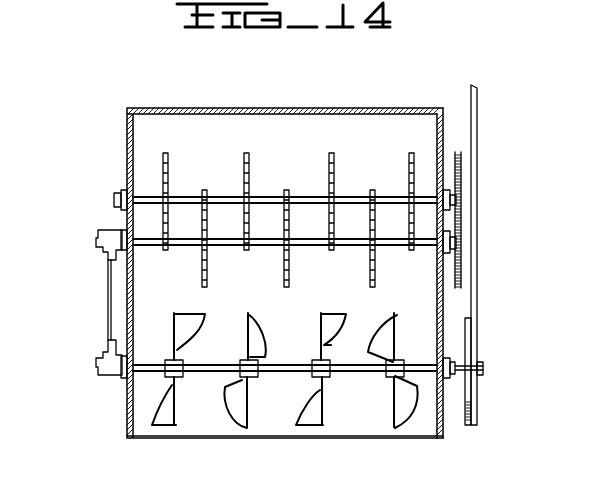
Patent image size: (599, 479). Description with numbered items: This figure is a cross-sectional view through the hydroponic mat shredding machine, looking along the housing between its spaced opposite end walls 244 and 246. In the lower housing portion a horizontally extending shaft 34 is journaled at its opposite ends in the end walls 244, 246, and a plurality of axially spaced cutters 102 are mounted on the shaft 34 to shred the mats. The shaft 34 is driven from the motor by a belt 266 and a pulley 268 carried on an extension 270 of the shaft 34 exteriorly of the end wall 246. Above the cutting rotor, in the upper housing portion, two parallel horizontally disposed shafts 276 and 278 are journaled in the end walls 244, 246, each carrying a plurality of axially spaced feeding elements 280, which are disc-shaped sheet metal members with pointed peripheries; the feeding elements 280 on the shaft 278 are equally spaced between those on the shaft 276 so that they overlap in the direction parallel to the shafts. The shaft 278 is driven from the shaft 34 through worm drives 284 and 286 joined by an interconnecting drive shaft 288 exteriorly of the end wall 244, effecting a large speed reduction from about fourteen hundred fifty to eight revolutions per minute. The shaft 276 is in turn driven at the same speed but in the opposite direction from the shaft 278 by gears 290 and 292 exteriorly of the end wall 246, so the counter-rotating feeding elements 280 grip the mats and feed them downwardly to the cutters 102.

The end wall 244 is at (127, 120).
The end wall 246 is at (438, 428).
The shaft 276 is at (252, 194).
The shaft 278 is at (224, 250).
The feeding elements 280 is at (166, 152).
The worm drive 284 is at (97, 369).
The worm drive 286 is at (98, 232).
The interconnecting drive shaft 288 is at (108, 318).
The gear 290 is at (462, 247).
The gear 292 is at (461, 157).
The belt 266 is at (477, 296).
The pulley 268 is at (471, 343).
The extension of shaft 270 is at (457, 374).
The shaft 34 is at (195, 365).
The cutters 102 is at (178, 400).